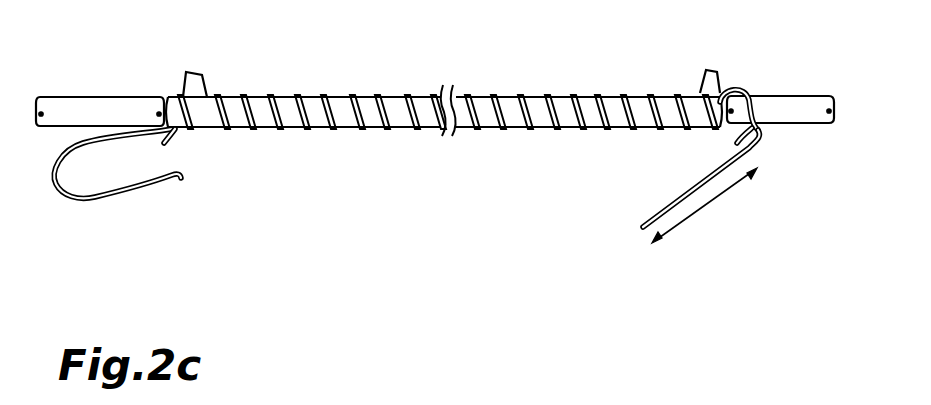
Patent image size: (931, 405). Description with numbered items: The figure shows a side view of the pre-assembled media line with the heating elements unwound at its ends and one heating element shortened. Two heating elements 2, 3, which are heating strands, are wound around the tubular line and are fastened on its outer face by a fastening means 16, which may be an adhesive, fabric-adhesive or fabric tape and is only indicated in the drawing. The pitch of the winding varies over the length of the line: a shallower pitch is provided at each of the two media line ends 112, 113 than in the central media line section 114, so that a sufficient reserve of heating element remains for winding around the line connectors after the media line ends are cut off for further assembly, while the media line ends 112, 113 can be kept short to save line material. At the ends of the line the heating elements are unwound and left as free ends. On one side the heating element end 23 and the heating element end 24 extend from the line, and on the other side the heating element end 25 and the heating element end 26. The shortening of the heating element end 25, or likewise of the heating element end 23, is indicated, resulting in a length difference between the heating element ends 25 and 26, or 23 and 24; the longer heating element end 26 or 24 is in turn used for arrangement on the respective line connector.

The first heating element 2 is at (444, 77).
The second heating element 3 is at (444, 77).
The fastening means 16 is at (193, 80).
The heating element end 23 is at (177, 138).
The heating element end 24 is at (82, 200).
The heating element end 25 is at (742, 90).
The heating element end 26 is at (663, 206).
The media line end 112 is at (88, 108).
The media line end 113 is at (787, 97).
The central media line section 114 is at (415, 100).